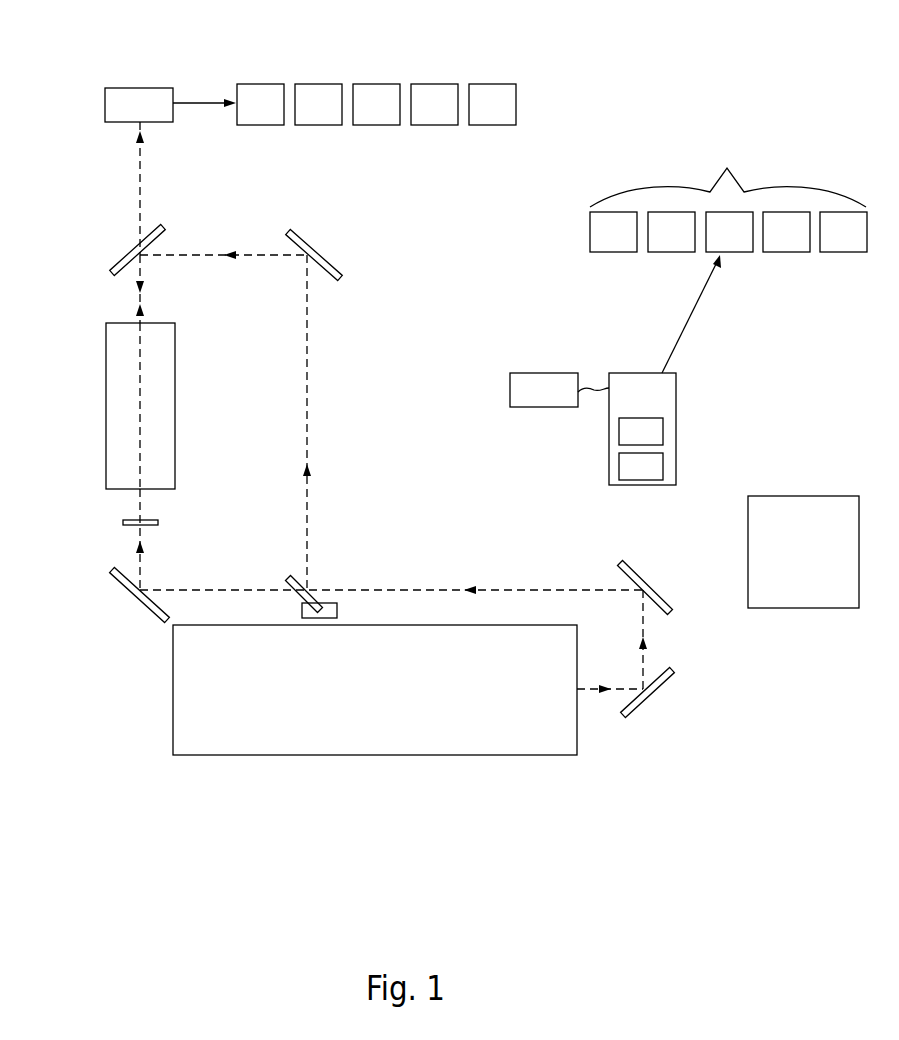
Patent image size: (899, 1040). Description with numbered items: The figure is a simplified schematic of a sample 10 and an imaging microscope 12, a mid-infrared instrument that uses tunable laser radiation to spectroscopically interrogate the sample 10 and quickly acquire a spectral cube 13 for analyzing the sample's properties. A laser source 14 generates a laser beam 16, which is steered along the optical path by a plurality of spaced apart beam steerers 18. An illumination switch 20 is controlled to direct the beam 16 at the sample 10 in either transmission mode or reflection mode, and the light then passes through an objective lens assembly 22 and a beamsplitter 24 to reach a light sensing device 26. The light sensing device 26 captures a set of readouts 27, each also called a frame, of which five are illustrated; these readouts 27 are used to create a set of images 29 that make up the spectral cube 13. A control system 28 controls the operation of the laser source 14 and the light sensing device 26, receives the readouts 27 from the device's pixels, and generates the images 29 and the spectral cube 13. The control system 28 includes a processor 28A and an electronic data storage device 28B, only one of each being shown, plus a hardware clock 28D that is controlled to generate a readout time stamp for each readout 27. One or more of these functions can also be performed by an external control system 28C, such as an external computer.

The sample 10 is at (123, 522).
The imaging microscope 12 is at (623, 100).
The spectral cube 13 is at (728, 172).
The laser source 14 is at (345, 745).
The laser beam 16 is at (590, 694).
The beam steerers 18 is at (646, 700).
The illumination switch 20 is at (314, 582).
The objective lens assembly 22 is at (106, 374).
The beamsplitter 24 is at (112, 266).
The light sensing device 26 is at (105, 103).
The readouts 27 is at (273, 115).
The control system 28 is at (655, 400).
The processor 28A is at (660, 441).
The electronic data storage device 28B is at (660, 476).
The external control system 28C is at (823, 557).
The hardware clock 28D is at (564, 400).
The images 29 is at (625, 243).